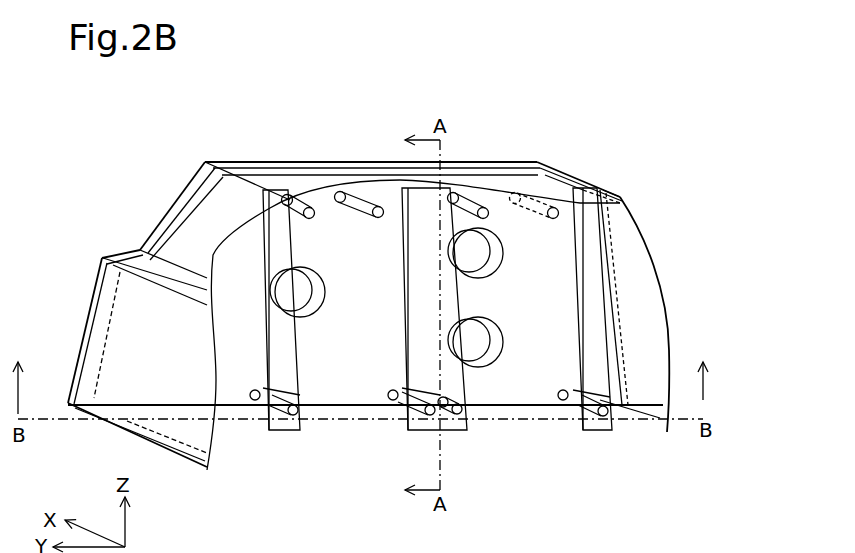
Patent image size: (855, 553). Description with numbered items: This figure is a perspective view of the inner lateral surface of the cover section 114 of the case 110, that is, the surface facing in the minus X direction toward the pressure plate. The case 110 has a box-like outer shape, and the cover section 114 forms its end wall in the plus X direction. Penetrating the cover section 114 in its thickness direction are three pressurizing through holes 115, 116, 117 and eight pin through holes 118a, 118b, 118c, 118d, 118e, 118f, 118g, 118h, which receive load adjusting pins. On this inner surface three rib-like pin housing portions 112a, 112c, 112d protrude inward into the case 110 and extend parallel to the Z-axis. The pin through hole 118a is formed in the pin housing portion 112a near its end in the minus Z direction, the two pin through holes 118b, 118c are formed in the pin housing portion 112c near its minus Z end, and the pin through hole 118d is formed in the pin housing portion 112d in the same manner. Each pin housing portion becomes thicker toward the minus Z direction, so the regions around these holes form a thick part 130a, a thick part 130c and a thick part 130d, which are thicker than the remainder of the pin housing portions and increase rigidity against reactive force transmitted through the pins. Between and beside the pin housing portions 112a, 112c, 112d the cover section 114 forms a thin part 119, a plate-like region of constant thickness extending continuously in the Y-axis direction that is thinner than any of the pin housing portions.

The case 110 is at (145, 190).
The cover section 114 is at (103, 312).
The pin housing portion 112a is at (617, 392).
The pin housing portion 112c is at (445, 395).
The pin housing portion 112d is at (303, 392).
The pressurizing through hole 115 is at (500, 273).
The pressurizing through hole 116 is at (493, 340).
The pressurizing through hole 117 is at (325, 292).
The pin through hole 118a is at (572, 418).
The pin through hole 118b is at (470, 398).
The pin through hole 118c is at (405, 418).
The pin through hole 118d is at (258, 400).
The pin through hole 118e is at (548, 207).
The pin through hole 118f is at (466, 200).
The pin through hole 118g is at (367, 200).
The pin through hole 118h is at (300, 200).
The thin part 119 is at (227, 393).
The thick part 130a is at (585, 387).
The thick part 130c is at (410, 380).
The thick part 130d is at (272, 383).